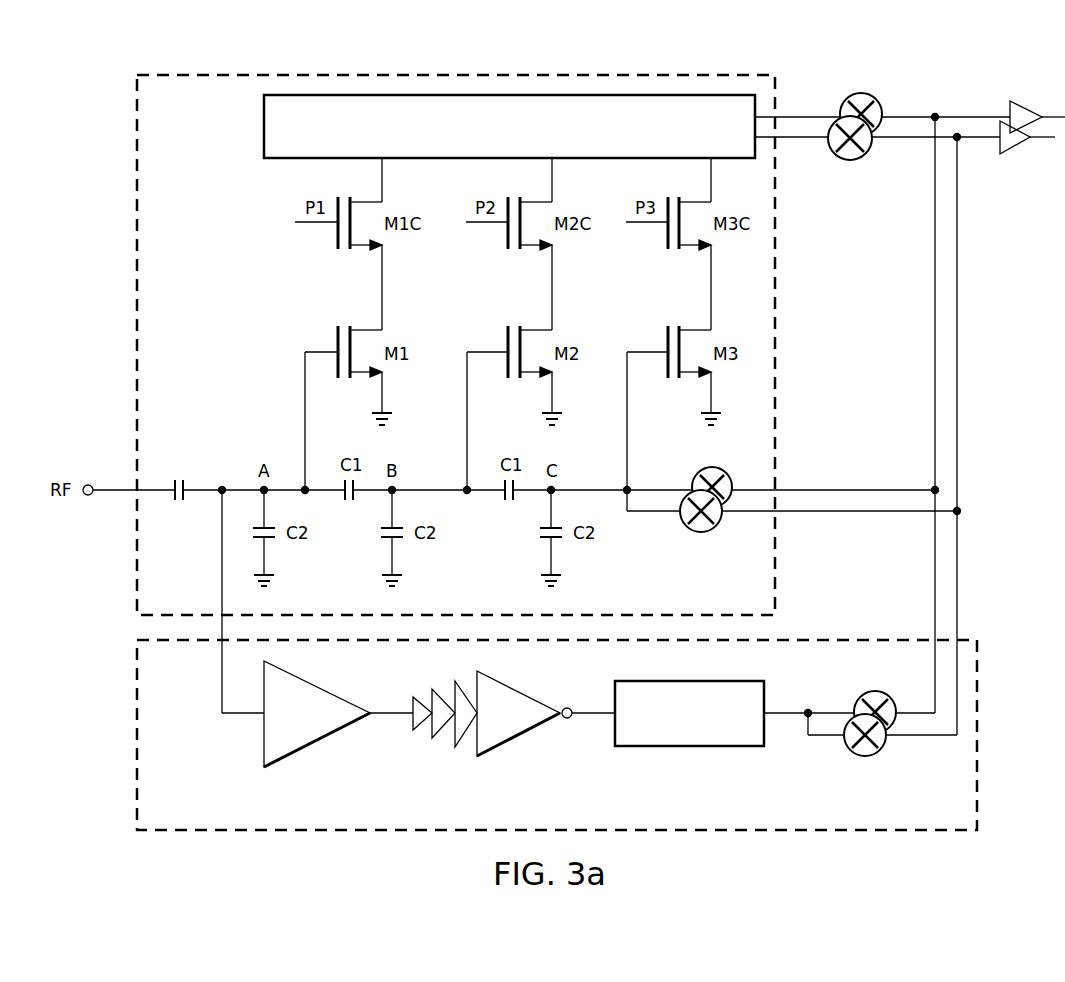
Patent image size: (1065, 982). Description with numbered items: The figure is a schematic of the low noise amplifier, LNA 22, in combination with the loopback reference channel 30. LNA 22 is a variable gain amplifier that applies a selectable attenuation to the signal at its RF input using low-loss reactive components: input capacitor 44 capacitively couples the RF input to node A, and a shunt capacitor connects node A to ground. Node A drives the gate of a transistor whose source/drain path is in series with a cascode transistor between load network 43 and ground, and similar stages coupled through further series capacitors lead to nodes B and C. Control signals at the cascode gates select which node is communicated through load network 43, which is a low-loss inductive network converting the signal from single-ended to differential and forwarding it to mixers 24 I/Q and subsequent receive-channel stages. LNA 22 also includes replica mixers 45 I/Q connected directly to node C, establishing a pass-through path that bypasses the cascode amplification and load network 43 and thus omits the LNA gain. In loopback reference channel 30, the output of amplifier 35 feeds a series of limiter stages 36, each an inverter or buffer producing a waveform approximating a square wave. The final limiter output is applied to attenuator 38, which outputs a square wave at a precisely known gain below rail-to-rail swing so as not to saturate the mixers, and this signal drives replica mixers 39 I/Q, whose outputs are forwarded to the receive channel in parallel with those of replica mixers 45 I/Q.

The LNA 22 is at (131, 157).
The load network 43 is at (264, 130).
The mixers 24 is at (888, 81).
The input capacitor 44 is at (178, 504).
The replica mixers 45 is at (736, 546).
The loopback reference channel 30 is at (131, 748).
The amplifier 35 is at (264, 735).
The limiter stages 36 is at (573, 763).
The attenuator 38 is at (690, 748).
The replica mixers 39 is at (897, 770).